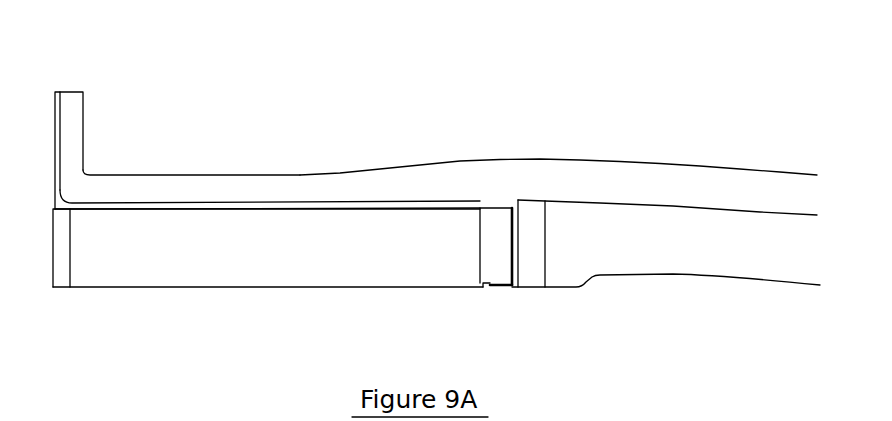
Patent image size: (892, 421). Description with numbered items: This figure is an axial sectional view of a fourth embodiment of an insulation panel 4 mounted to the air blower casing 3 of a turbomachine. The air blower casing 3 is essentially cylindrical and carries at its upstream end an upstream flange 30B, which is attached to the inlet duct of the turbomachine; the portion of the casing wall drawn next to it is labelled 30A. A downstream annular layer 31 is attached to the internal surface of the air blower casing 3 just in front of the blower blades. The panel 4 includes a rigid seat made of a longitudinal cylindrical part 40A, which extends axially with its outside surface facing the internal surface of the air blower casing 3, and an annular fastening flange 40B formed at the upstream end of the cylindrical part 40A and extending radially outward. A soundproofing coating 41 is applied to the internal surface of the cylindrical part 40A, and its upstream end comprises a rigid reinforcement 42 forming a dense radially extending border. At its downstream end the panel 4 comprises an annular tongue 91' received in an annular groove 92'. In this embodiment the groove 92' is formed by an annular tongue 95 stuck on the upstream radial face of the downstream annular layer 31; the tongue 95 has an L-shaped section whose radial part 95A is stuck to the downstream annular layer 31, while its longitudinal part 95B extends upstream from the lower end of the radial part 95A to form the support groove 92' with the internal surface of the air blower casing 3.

The air blower casing 3 is at (620, 159).
The downstream annular layer 31 is at (686, 217).
The panel 4 is at (125, 280).
The soundproofing coating 41 is at (173, 247).
The rigid reinforcement 42 is at (63, 243).
The core horizontal portion 30A is at (173, 183).
The upstream flange 30B is at (63, 123).
The longitudinal cylindrical part 40A is at (230, 207).
The annular fastening flange 40B is at (55, 144).
The annular tongue 91' is at (483, 195).
The annular groove 92' is at (396, 260).
The annular tongue 95 is at (516, 294).
The radial part 95A is at (518, 254).
The longitudinal part 95B is at (490, 288).